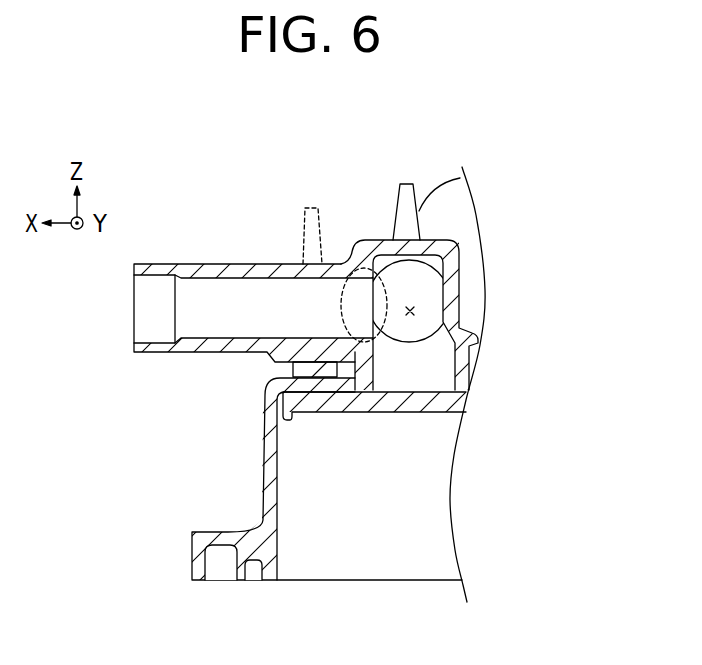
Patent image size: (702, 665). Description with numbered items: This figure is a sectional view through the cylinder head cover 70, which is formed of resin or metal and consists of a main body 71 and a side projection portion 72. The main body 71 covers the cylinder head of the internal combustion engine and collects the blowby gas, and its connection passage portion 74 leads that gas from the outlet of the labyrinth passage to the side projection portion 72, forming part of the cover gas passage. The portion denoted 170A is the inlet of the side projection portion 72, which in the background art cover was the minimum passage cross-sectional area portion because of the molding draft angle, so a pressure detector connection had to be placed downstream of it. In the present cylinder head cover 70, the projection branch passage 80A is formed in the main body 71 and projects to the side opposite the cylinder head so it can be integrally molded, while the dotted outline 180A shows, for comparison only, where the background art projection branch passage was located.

The cylinder head cover 70 is at (339, 155).
The main body 71 is at (252, 446).
The side projection portion 72 is at (192, 250).
The connection passage portion 74 is at (414, 311).
The projection branch passage 80A is at (409, 175).
The minimum passage cross-sectional area portion of the background art cylinder head 170A is at (388, 288).
The position of the projection branch passage in the background art cylinder head co 180A is at (298, 218).